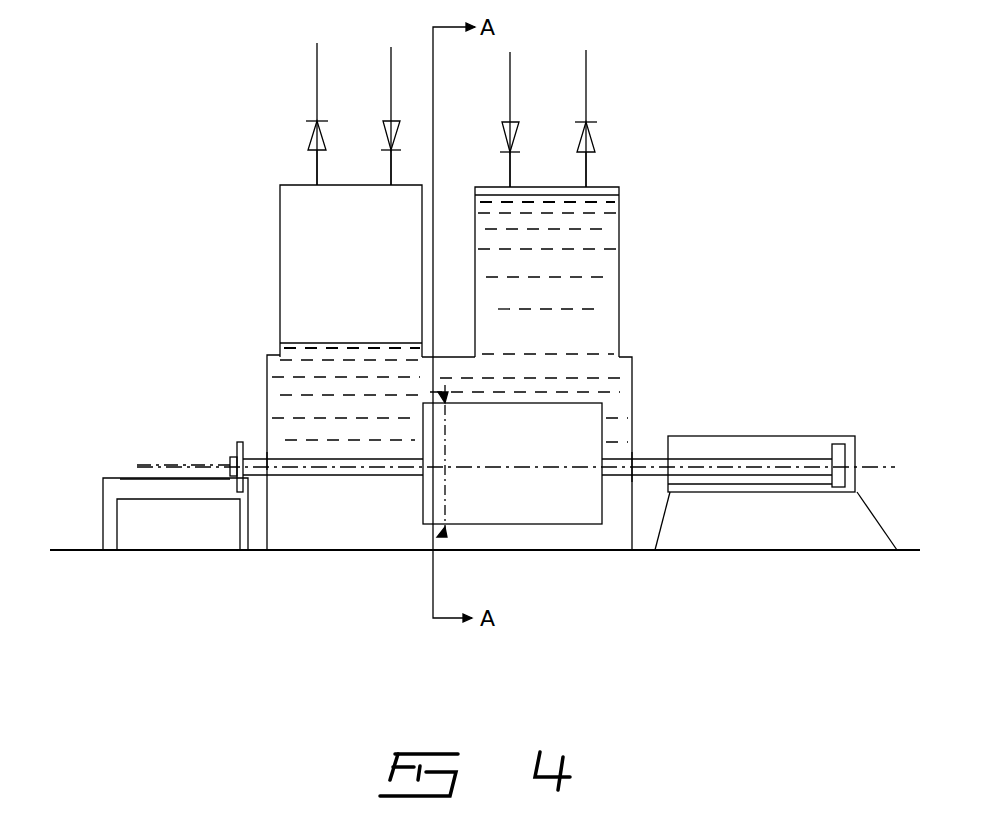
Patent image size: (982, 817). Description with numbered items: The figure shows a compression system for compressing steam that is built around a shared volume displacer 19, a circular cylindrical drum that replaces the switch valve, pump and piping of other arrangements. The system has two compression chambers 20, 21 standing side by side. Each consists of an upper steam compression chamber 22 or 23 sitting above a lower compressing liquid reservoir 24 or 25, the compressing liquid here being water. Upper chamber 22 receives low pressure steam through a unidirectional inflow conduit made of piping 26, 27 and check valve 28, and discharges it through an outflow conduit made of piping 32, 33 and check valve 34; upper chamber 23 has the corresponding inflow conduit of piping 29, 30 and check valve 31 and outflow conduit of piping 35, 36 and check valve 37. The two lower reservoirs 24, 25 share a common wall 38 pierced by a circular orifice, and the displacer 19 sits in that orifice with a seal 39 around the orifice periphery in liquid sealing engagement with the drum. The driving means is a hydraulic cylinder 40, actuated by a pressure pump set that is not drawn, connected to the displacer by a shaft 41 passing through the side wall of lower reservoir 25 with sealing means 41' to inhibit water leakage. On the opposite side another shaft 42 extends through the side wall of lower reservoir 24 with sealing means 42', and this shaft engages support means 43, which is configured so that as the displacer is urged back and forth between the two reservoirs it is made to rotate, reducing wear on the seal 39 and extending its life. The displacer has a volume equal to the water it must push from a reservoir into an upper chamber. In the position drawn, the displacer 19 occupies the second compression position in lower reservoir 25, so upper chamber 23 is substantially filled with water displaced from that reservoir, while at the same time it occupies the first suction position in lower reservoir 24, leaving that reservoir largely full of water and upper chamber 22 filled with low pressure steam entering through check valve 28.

The shared volume displacer 19 is at (600, 407).
The compression chamber 20 is at (258, 343).
The compression chamber 21 is at (619, 348).
The upper steam compression chamber 22 is at (290, 250).
The upper steam compression chamber 23 is at (588, 295).
The lower compressing liquid reservoir 24 is at (310, 515).
The lower compressing liquid reservoir 25 is at (580, 537).
The piping 26 is at (392, 175).
The piping 27 is at (391, 58).
The check valve 28 is at (398, 132).
The piping 29 is at (512, 178).
The piping 30 is at (512, 62).
The check valve 31 is at (515, 130).
The piping 32 is at (315, 165).
The piping 33 is at (317, 78).
The check valve 34 is at (312, 133).
The piping 35 is at (588, 170).
The piping 36 is at (588, 78).
The check valve 37 is at (592, 137).
The common wall 38 is at (445, 390).
The seal 39 is at (445, 403).
The hydraulic cylinder 40 is at (745, 483).
The shaft 41 is at (758, 437).
The sealing means 41' is at (653, 431).
The shaft 42 is at (198, 445).
The sealing means 42' is at (228, 419).
The support means 43 is at (122, 487).